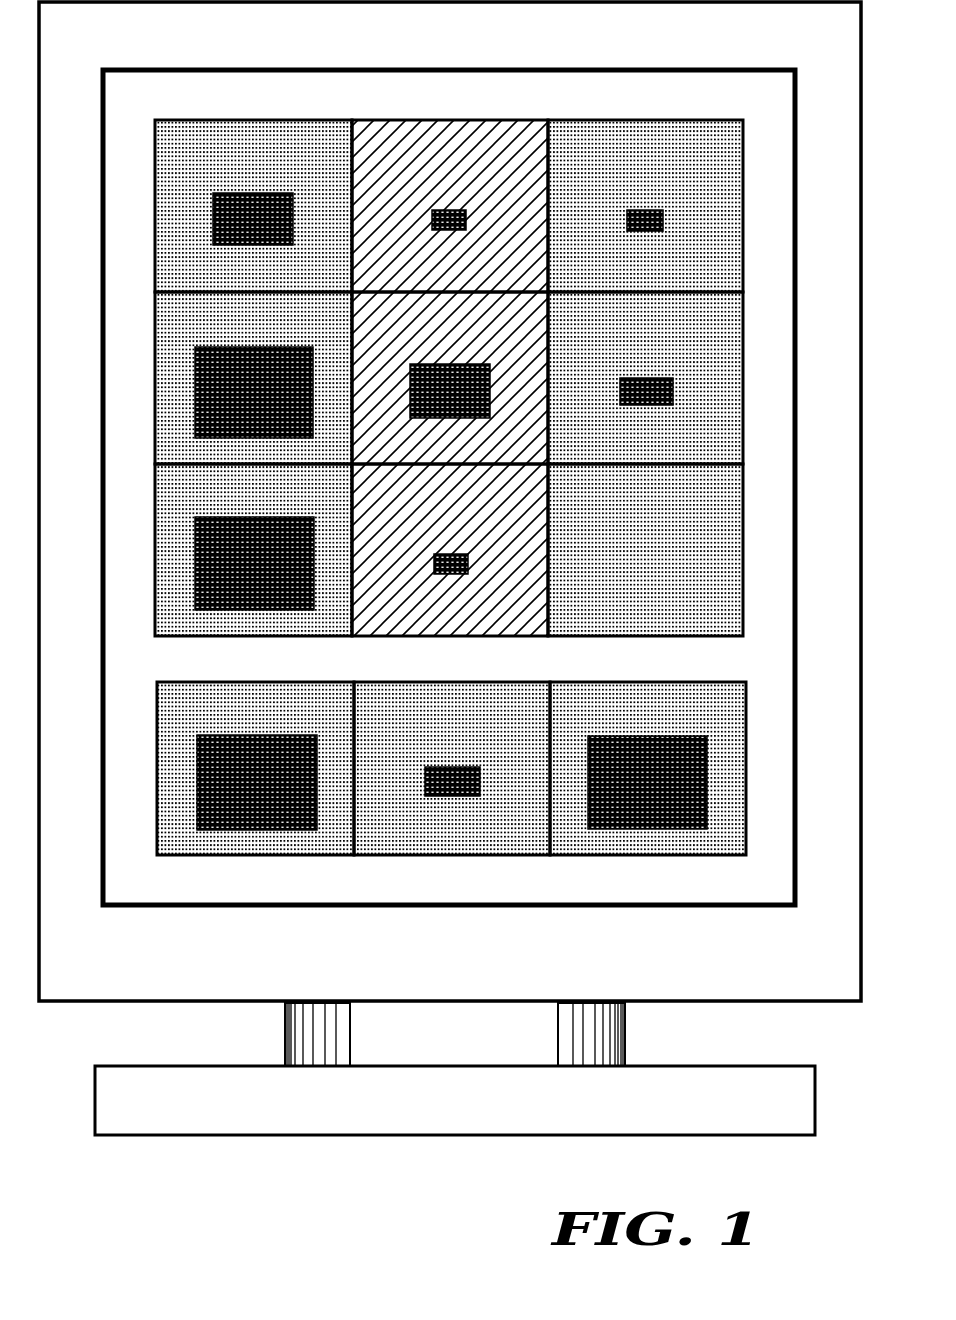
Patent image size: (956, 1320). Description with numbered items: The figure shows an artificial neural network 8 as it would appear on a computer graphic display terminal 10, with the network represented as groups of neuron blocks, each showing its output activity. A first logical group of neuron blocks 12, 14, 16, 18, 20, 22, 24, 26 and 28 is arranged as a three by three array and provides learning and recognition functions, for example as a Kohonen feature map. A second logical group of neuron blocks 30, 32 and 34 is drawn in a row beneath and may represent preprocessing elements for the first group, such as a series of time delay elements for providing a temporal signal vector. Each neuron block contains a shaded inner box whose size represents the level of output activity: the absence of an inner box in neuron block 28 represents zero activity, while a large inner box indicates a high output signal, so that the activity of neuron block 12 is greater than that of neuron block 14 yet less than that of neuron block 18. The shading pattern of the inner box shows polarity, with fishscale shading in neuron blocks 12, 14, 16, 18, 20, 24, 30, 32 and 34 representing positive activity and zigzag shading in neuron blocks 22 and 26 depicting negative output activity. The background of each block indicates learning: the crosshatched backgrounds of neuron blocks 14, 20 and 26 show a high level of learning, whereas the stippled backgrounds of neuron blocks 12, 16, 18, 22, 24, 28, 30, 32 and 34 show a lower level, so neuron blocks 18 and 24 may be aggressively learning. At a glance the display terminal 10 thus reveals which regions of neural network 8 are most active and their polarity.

The neural network 8 is at (452, 875).
The computer graphic display terminal 10 is at (118, 1003).
The neuron block 12 is at (187, 154).
The neuron block 14 is at (384, 154).
The neuron block 16 is at (580, 154).
The neuron block 18 is at (187, 326).
The neuron block 20 is at (384, 326).
The neuron block 22 is at (580, 326).
The neuron block 24 is at (187, 498).
The neuron block 26 is at (384, 498).
The neuron block 28 is at (580, 498).
The neuron block 30 is at (189, 714).
The neuron block 32 is at (386, 714).
The neuron block 34 is at (582, 714).